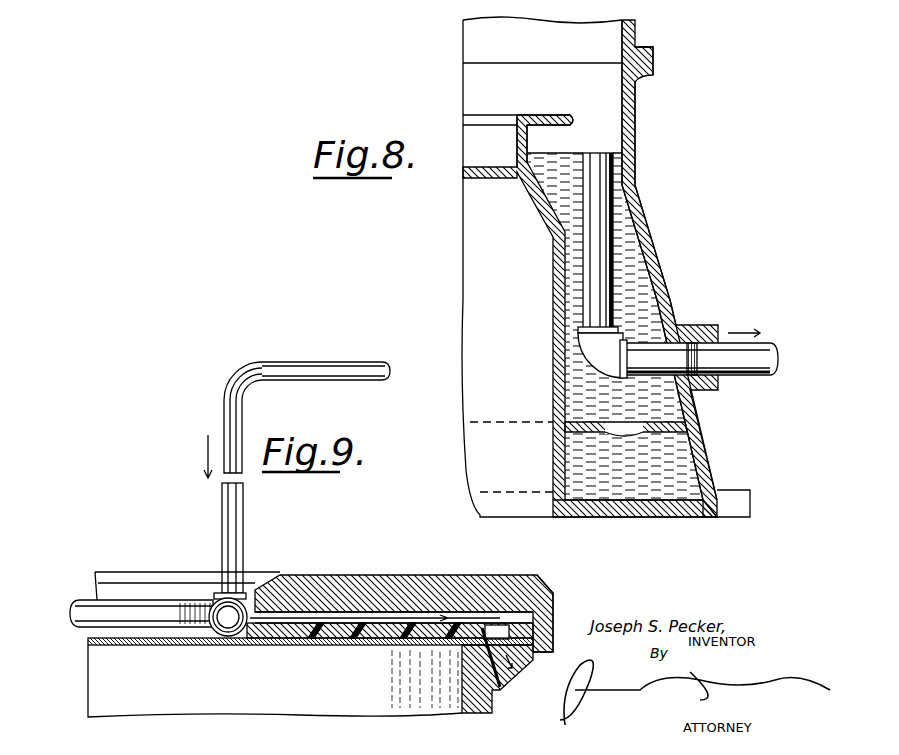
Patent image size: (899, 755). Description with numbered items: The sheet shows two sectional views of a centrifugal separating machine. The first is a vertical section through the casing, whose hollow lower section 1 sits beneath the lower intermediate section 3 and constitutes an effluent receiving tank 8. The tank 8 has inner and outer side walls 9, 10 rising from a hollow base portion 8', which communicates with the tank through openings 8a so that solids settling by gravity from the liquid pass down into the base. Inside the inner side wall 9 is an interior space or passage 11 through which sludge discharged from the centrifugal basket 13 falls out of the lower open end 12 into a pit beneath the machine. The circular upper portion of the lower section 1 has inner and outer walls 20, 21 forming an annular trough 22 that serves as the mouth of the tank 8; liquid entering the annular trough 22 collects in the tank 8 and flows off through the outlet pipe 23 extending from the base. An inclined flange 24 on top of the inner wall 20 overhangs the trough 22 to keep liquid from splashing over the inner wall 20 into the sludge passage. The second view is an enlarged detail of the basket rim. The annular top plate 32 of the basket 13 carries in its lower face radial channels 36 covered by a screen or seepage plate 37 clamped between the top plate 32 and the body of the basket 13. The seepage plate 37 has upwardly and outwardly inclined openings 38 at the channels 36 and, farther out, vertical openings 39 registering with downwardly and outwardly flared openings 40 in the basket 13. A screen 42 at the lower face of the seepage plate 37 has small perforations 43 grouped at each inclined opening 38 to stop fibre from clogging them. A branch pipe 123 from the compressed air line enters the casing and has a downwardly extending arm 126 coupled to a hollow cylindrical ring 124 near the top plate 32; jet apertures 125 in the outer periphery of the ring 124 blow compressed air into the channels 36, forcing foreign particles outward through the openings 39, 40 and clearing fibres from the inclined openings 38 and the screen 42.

In FIG. 8, the lower section 1 is at (645, 78).
In FIG. 8, the lower intermediate section 3 is at (638, 46).
In FIG. 8, the effluent receiving tank 8 is at (606, 287).
In FIG. 8, the openings 8a is at (660, 436).
In FIG. 8, the hollow base portion 8' is at (654, 466).
In FIG. 8, the inner side wall 9 is at (553, 328).
In FIG. 8, the outer side wall 10 is at (656, 278).
In FIG. 8, the interior space or passage 11 is at (542, 267).
In FIG. 8, the lower open end 12 is at (515, 513).
In FIG. 8, the inner wall 20 is at (515, 152).
In FIG. 8, the outer wall 21 is at (636, 142).
In FIG. 8, the annular trough 22 is at (574, 137).
In FIG. 8, the outlet pipe 23 is at (740, 370).
In FIG. 8, the inclined flange 24 is at (562, 114).
In FIG. 9, the branch pipe 123 is at (338, 346).
In FIG. 9, the hollow cylindrical ring 124 is at (140, 607).
In FIG. 9, the jet apertures 125 is at (230, 636).
In FIG. 9, the downwardly extending arm 126 is at (220, 520).
In FIG. 9, the top plate 32 is at (315, 575).
In FIG. 9, the radial channels 36 is at (378, 614).
In FIG. 9, the inclined openings 38 is at (410, 625).
In FIG. 9, the vertical openings 39 is at (490, 630).
In FIG. 9, the screen or seepage plate 37 is at (548, 625).
In FIG. 9, the flared openings 40 is at (512, 672).
In FIG. 9, the screen 42 is at (283, 640).
In FIG. 9, the perforations 43 is at (352, 646).
In FIG. 9, the centrifugal basket 13 is at (478, 713).